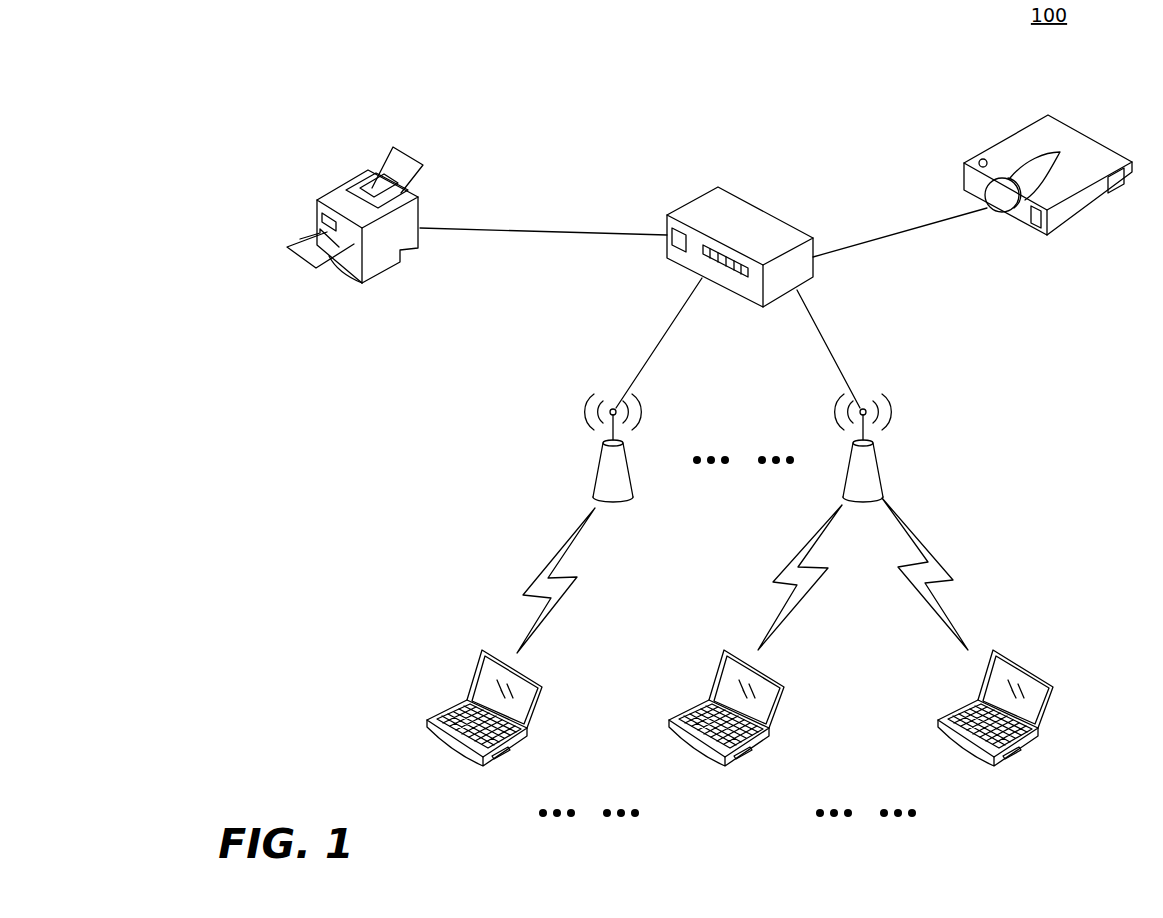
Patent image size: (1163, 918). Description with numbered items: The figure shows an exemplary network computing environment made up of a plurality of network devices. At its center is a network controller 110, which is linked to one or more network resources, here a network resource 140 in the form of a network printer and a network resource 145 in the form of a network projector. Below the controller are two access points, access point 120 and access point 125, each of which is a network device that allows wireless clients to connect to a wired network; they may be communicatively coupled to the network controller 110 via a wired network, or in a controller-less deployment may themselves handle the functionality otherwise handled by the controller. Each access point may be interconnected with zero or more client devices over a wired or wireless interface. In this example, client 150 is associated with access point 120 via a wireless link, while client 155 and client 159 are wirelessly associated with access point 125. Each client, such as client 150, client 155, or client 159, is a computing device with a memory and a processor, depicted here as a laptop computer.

The network controller 110 is at (775, 217).
The access point 120 is at (597, 472).
The access point 125 is at (878, 468).
The network resource 140 is at (323, 193).
The network resource 145 is at (1088, 215).
The client 150 is at (511, 673).
The client 155 is at (755, 671).
The client 159 is at (967, 668).